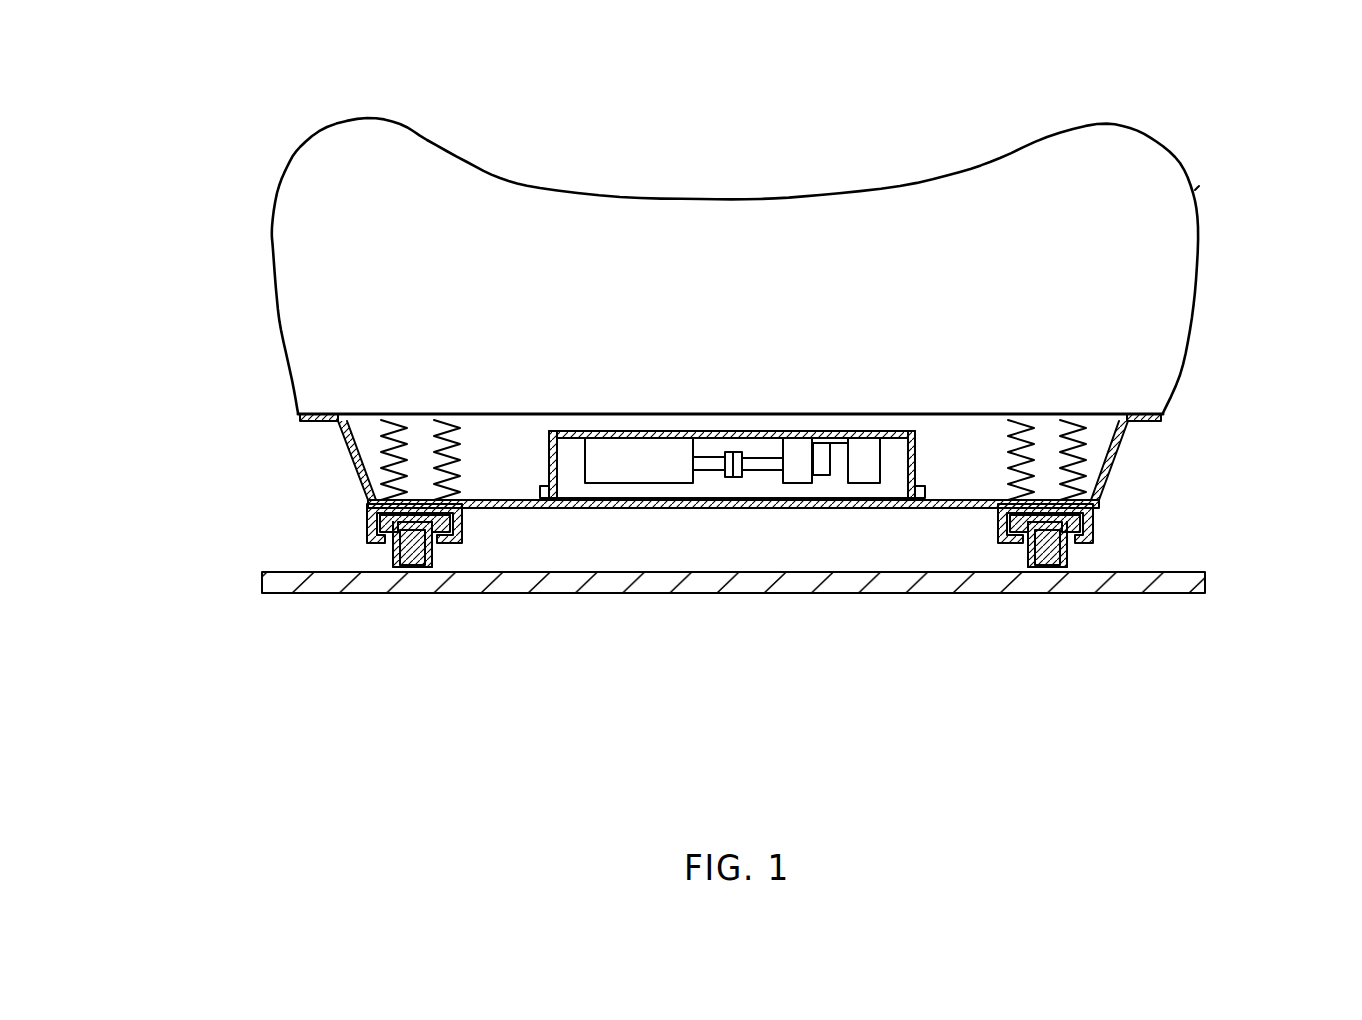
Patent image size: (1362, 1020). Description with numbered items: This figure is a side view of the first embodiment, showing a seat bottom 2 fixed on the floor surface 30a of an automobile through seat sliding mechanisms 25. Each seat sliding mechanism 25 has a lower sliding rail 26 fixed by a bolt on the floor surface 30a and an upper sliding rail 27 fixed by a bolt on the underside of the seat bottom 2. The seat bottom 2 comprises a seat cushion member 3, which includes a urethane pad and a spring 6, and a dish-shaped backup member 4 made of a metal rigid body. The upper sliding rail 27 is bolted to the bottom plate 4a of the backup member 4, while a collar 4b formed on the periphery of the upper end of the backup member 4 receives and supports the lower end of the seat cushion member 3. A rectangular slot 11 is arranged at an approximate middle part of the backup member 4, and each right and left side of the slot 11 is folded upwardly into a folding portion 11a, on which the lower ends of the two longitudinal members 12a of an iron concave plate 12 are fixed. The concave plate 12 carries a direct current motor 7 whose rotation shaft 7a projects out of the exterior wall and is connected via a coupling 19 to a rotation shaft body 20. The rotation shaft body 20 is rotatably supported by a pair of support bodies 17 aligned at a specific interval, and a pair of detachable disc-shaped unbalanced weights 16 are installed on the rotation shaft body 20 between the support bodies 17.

The seat bottom 2 is at (1198, 192).
The seat cushion member 3 is at (1175, 270).
The backup member 4 is at (1125, 452).
The bottom plate 4a is at (730, 592).
The collar 4b is at (1133, 428).
The spring 6 is at (733, 418).
The direct current motor 7 is at (615, 557).
The rotation shaft 7a is at (652, 581).
The rectangular slot 11 is at (733, 614).
The folding portion 11a is at (745, 274).
The concave plate 12 is at (705, 431).
The longitudinal members 12a is at (733, 274).
The unbalanced weights 16 is at (816, 571).
The support bodies 17 is at (805, 595).
The coupling 19 is at (740, 483).
The rotation shaft body 20 is at (819, 290).
The seat sliding mechanisms 25 is at (1104, 547).
The lower sliding rail 26 is at (730, 613).
The upper sliding rail 27 is at (730, 607).
The floor surface 30a is at (293, 580).